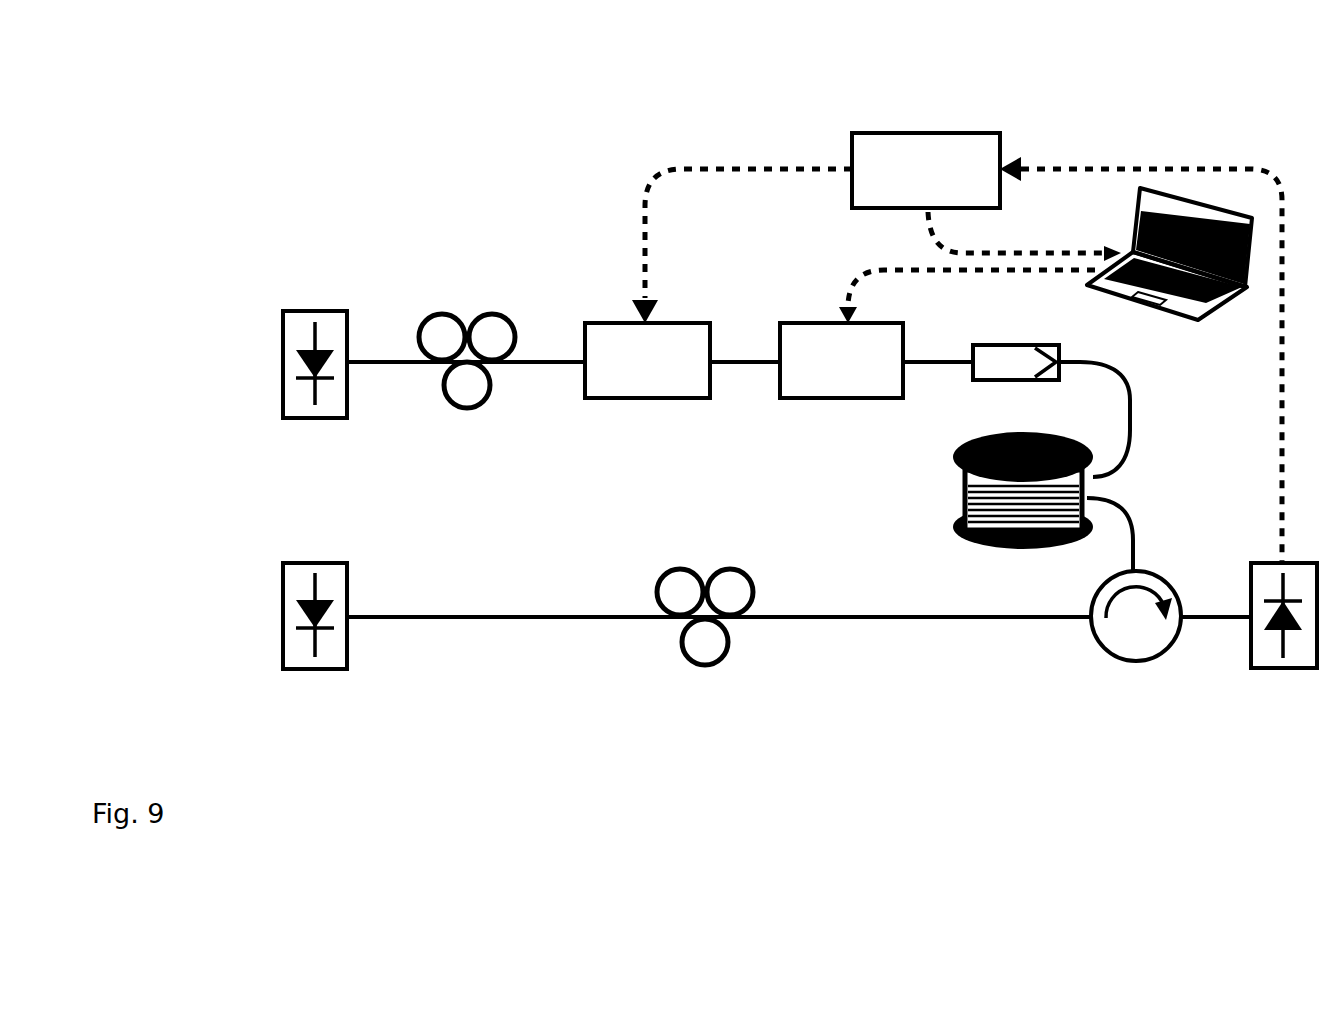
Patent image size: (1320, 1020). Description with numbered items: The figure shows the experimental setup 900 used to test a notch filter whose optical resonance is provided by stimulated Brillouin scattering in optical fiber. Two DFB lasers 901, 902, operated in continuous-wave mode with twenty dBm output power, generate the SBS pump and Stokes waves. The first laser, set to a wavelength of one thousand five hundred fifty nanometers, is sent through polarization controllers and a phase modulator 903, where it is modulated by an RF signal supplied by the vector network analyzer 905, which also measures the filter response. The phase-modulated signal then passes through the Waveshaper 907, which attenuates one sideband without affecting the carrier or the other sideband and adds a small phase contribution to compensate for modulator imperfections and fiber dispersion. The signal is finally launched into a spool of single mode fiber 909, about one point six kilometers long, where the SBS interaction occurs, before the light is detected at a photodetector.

The setup 900 is at (385, 88).
The DFB laser 901 is at (283, 342).
The DFB laser 902 is at (283, 580).
The phase modulator 903 is at (603, 399).
The vector network analyzer 905 is at (887, 132).
The Waveshaper 907 is at (808, 399).
The single mode fiber 909 is at (958, 518).